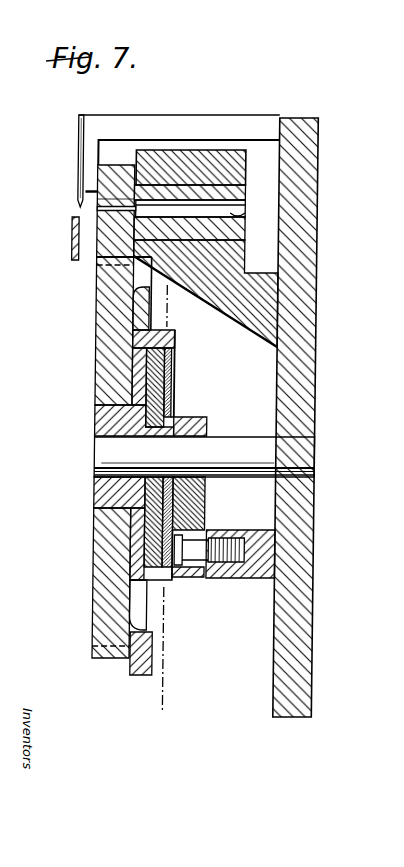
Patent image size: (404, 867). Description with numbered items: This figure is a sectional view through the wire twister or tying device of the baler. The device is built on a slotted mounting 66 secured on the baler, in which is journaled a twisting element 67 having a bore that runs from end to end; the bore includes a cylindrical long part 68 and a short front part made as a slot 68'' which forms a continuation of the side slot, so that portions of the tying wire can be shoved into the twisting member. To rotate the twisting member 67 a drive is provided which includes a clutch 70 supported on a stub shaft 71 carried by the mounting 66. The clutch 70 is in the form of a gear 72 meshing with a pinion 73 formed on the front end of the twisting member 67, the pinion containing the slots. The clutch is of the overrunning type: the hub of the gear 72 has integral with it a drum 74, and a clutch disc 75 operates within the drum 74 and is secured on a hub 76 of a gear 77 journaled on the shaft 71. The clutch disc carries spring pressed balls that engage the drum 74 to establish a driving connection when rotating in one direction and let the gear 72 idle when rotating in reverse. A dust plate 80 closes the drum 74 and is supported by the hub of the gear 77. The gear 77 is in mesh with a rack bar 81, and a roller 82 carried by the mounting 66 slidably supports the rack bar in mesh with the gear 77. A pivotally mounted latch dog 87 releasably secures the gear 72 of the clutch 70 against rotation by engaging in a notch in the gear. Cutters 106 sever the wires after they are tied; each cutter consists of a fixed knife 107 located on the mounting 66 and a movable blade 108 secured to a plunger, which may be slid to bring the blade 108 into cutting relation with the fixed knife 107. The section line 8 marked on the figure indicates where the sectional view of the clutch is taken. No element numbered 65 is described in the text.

The section line 8 is at (166, 300).
The coil block 65 is at (192, 148).
The slotted mounting 66 is at (312, 124).
The twisting element 67 is at (245, 189).
The cylindrical long part of the bore 68 is at (205, 205).
The slot 68'' is at (94, 249).
The clutch 70 is at (93, 340).
The stub shaft 71 is at (204, 457).
The gear 72 is at (93, 557).
The pinion 73 is at (97, 200).
The drum 74 is at (174, 341).
The clutch disc 75 is at (160, 390).
The hub 76 is at (194, 419).
The gear 77 is at (207, 419).
The dust plate 80 is at (175, 368).
The rack bar 81 is at (198, 513).
The roller 82 is at (197, 573).
The latch dog 87 is at (133, 675).
The cutter 106 is at (83, 192).
The fixed knife 107 is at (76, 158).
The movable blade 108 is at (70, 235).